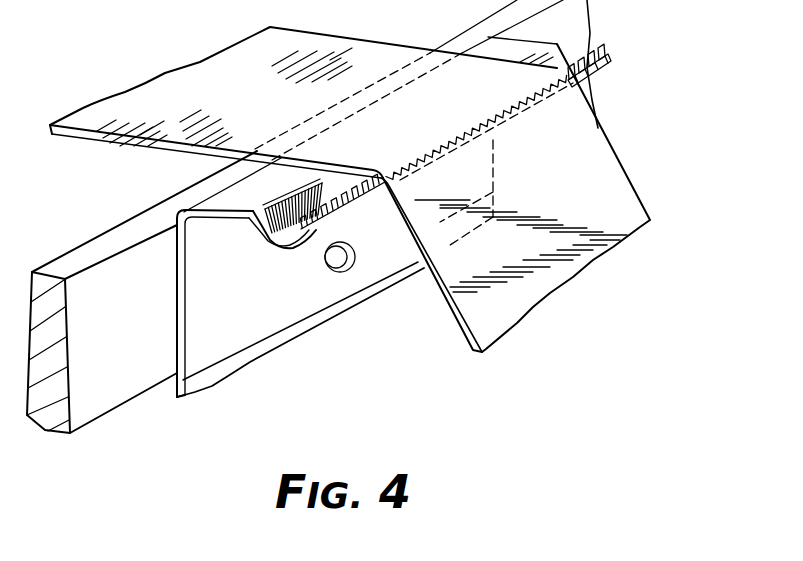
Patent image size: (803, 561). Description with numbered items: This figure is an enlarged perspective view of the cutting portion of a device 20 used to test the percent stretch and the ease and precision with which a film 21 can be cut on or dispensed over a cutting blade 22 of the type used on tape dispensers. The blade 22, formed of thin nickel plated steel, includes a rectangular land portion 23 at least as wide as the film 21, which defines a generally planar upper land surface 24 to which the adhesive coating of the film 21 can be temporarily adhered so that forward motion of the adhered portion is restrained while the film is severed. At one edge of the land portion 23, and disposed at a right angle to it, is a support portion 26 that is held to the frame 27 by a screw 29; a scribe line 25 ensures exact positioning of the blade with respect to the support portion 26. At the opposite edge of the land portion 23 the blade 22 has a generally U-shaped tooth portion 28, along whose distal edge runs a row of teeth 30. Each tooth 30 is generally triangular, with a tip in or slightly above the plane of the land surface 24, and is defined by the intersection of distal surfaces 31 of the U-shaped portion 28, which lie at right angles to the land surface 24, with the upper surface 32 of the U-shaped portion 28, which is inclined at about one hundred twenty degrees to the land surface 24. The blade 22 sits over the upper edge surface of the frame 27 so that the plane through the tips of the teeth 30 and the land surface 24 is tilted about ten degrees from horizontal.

The device 20 is at (361, 306).
The film 21 is at (258, 95).
The cutting blade 22 is at (371, 206).
The land portion 23 is at (223, 217).
The land surface 24 is at (281, 197).
The scribe line 25 is at (237, 354).
The support portion 26 is at (176, 309).
The frame 27 is at (92, 410).
The U-shaped tooth portion 28 is at (282, 293).
The screw 29 is at (340, 273).
The teeth 30 is at (328, 205).
The distal surfaces 31 is at (322, 230).
The upper surface 32 is at (290, 243).